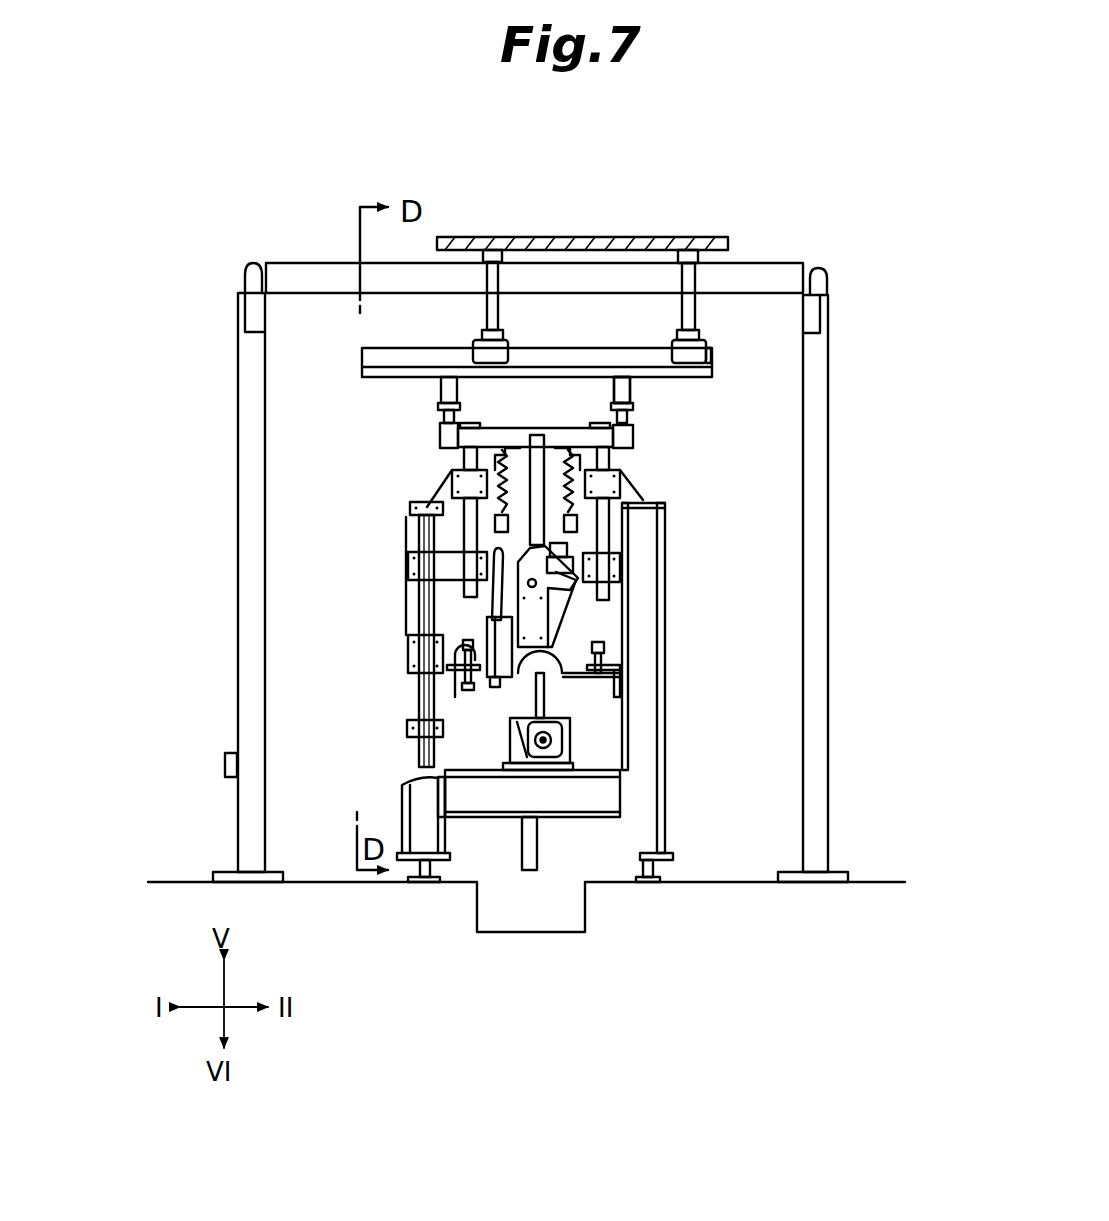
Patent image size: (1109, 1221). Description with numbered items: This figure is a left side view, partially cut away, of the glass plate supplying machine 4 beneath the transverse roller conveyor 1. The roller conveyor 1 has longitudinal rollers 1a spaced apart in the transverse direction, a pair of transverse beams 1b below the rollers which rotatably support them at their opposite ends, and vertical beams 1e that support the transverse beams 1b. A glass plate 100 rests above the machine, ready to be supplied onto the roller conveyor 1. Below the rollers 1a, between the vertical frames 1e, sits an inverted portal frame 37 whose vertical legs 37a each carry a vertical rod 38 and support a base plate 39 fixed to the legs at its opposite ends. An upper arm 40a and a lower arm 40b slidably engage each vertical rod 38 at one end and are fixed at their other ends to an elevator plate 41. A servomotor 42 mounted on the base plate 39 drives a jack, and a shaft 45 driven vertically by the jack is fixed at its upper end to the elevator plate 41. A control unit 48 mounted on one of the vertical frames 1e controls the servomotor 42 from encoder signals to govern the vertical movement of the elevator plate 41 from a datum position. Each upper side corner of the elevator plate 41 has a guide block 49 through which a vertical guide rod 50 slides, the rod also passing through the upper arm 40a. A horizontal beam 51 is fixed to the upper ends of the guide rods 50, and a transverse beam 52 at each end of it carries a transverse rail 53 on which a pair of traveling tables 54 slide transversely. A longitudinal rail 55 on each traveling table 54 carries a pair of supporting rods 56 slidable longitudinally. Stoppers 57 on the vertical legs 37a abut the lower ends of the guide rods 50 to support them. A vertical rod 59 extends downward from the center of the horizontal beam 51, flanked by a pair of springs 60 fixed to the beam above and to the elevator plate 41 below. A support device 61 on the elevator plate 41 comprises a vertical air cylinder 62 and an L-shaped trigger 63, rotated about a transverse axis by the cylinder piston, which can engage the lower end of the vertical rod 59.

The transverse roller conveyor 1 is at (527, 543).
The longitudinal rollers 1a is at (318, 275).
The transverse beams 1b is at (830, 312).
The vertical beams 1e is at (250, 835).
The glass plate supplying machine 4 is at (400, 691).
The inverted portal frame 37 is at (670, 671).
The vertical legs 37a is at (650, 817).
The vertical rod 38 is at (423, 613).
The base plate 39 is at (595, 772).
The upper arm 40a is at (408, 565).
The lower arm 40b is at (403, 663).
The elevator plate 41 is at (440, 500).
The servomotor 42 is at (570, 738).
The shaft 45 is at (540, 705).
The control unit 48 is at (230, 768).
The guide block 49 is at (455, 478).
The vertical guide rod 50 is at (470, 530).
The horizontal beam 51 is at (627, 390).
The transverse beam 52 is at (625, 440).
The transverse rail 53 is at (458, 415).
The traveling table 54 is at (600, 376).
The longitudinal rail 55 is at (548, 362).
The supporting rods 56 is at (497, 268).
The stoppers 57 is at (600, 648).
The vertical rod 59 is at (667, 512).
The springs 60 is at (568, 462).
The support device 61 is at (478, 607).
The vertical air cylinder 62 is at (495, 660).
The L-shaped trigger 63 is at (575, 600).
The glass plate 100 is at (607, 240).